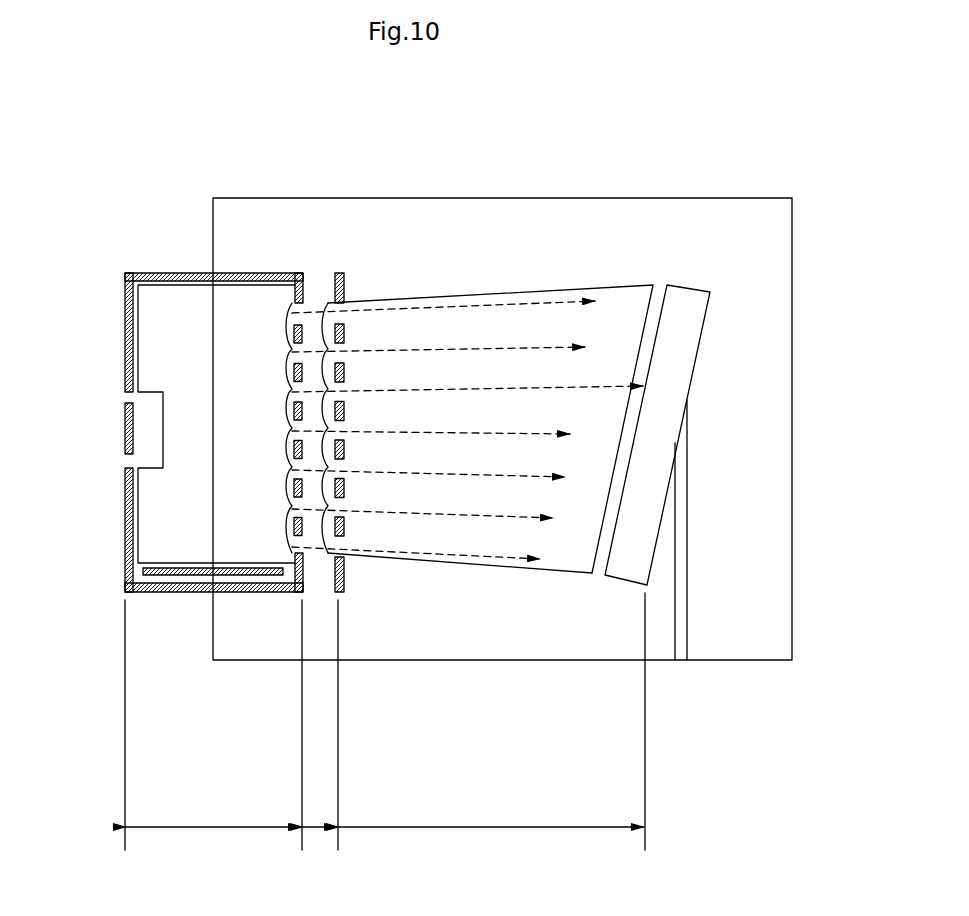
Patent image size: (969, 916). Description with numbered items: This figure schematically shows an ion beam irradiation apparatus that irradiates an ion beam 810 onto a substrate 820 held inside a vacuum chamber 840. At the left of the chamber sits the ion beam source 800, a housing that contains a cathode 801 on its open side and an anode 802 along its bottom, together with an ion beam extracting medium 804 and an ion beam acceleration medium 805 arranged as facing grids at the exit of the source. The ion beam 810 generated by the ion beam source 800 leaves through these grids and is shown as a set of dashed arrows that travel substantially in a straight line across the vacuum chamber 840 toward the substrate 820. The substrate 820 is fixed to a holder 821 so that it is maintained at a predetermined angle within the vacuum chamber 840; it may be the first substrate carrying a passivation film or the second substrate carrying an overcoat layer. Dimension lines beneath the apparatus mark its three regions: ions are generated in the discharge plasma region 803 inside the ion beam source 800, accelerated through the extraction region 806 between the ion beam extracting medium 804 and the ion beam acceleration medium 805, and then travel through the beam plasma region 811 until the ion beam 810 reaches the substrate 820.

The ion beam source 800 is at (144, 273).
The cathode 801 is at (123, 418).
The anode 802 is at (183, 575).
The discharge plasma region 803 is at (213, 736).
The ion beam extracting medium 804 is at (292, 330).
The ion beam acceleration medium 805 is at (345, 281).
The extraction region 806 is at (318, 752).
The ion beam 810 is at (457, 313).
The beam plasma region 811 is at (492, 733).
The substrate 820 is at (687, 300).
The holder 821 is at (680, 605).
The vacuum chamber 840 is at (478, 661).